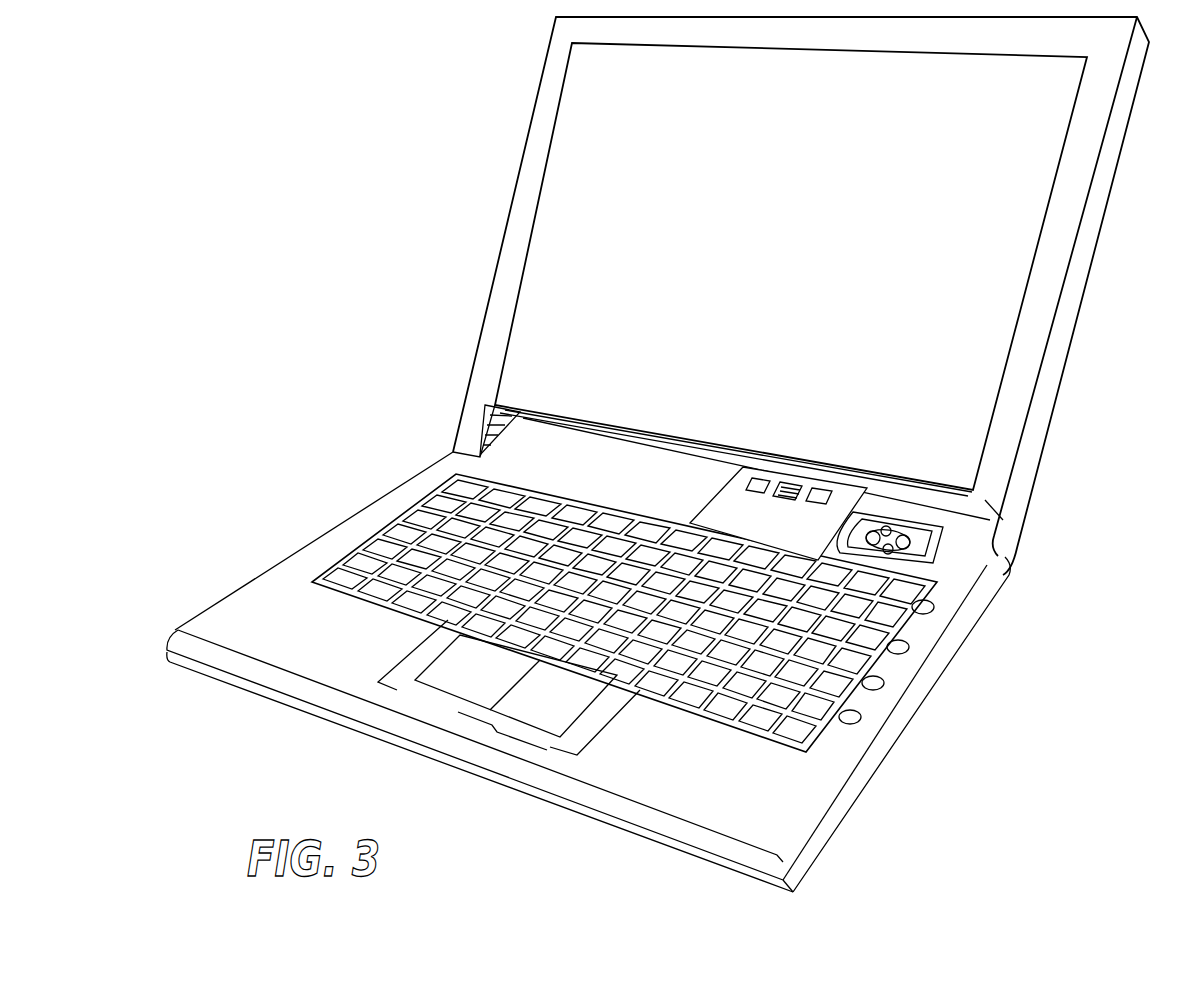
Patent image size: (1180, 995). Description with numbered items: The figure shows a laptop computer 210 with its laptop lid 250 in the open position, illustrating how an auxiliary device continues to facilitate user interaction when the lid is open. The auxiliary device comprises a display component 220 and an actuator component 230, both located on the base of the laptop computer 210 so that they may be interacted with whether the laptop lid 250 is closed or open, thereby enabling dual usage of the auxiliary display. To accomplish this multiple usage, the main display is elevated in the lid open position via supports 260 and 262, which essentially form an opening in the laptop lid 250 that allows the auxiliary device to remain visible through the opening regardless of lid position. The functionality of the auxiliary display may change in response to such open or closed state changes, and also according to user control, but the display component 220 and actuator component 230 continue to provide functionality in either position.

The laptop computer 210 is at (290, 546).
The display component 220 is at (768, 468).
The actuator component 230 is at (913, 528).
The laptop lid 250 is at (526, 138).
The support 260 is at (490, 440).
The support 262 is at (988, 508).